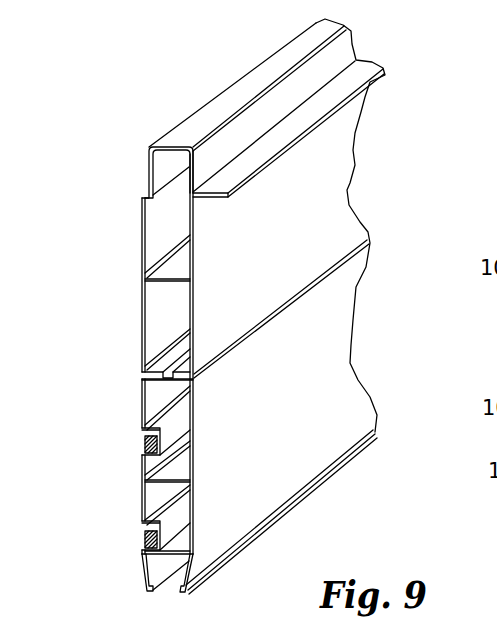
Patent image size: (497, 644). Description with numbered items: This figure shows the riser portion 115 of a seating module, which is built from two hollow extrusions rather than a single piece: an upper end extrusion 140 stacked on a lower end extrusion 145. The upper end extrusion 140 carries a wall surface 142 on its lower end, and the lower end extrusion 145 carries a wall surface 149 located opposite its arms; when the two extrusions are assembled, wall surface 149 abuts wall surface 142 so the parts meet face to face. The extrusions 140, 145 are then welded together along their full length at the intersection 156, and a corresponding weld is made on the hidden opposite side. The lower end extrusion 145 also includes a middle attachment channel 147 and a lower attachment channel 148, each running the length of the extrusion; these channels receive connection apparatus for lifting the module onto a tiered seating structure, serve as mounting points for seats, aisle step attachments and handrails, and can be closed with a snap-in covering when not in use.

The riser portion 115 is at (413, 128).
The upper end extrusion 140 is at (142, 244).
The wall surface 142 is at (152, 369).
The wall surface 149 is at (142, 385).
The lower end extrusion 145 is at (142, 428).
The middle attachment channel 147 is at (134, 442).
The lower attachment channel 148 is at (134, 534).
The intersection 156 is at (367, 246).